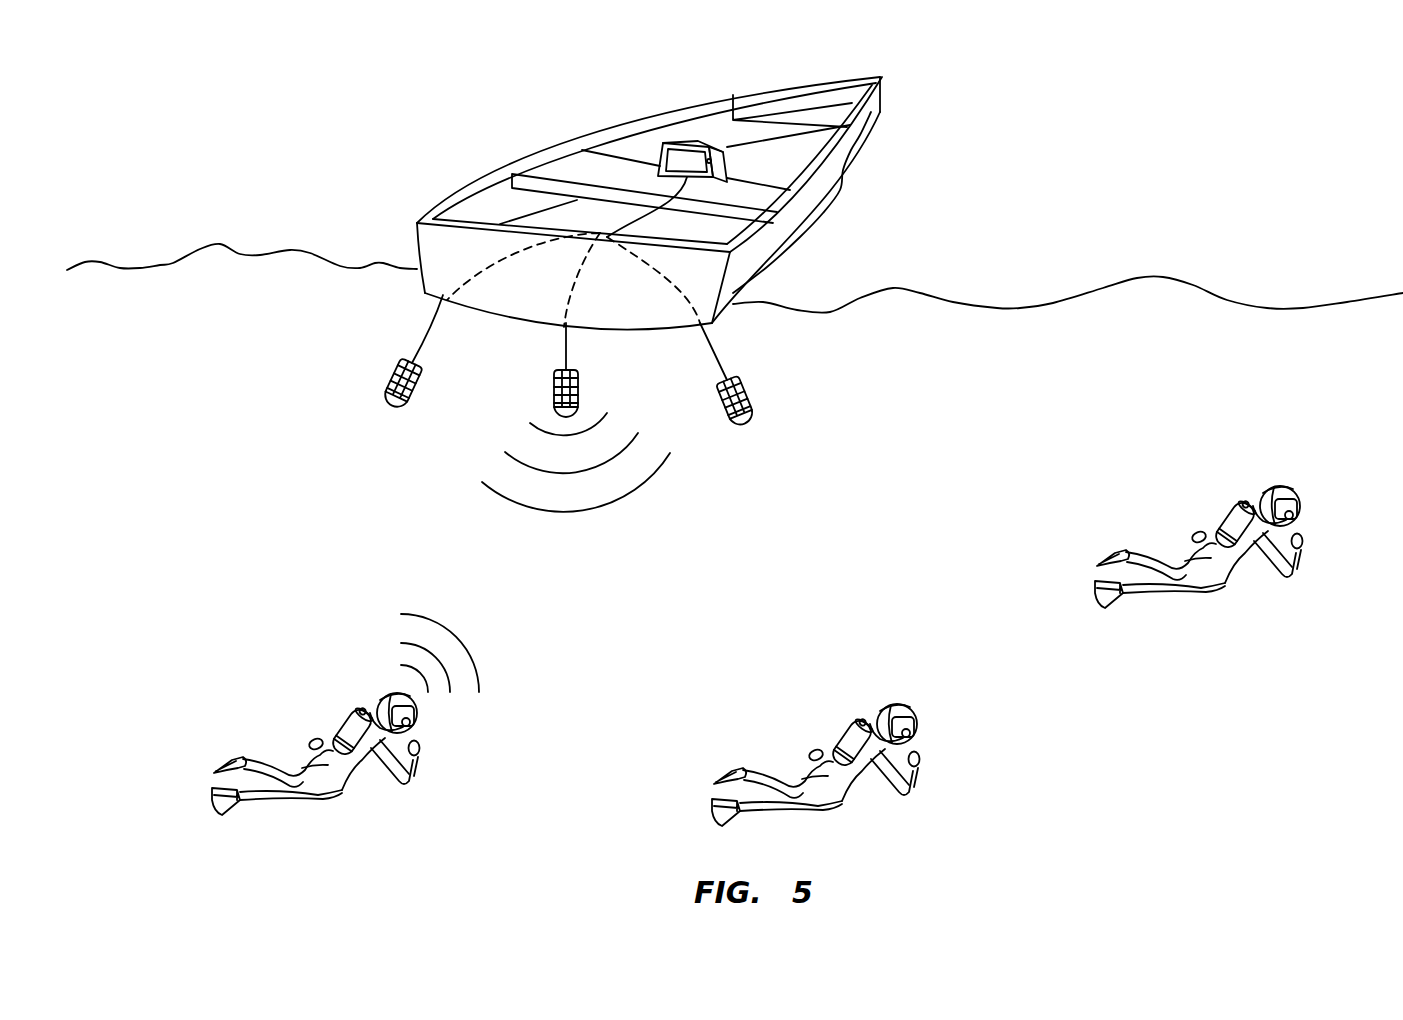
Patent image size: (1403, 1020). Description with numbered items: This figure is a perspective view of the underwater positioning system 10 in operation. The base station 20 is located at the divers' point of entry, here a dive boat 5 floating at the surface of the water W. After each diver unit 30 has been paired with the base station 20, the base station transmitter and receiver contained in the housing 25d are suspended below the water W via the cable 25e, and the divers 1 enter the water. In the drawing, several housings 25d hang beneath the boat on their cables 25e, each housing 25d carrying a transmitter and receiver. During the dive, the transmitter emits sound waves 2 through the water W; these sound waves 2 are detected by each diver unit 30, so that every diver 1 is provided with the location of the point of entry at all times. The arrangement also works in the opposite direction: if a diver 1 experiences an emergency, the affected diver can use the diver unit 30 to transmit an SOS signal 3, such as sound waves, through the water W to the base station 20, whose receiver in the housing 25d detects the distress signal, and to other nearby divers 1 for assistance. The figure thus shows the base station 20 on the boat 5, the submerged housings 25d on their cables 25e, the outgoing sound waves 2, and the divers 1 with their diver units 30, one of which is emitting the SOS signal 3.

The system 10 is at (735, 424).
The dive boat 5 is at (736, 93).
The base station 20 is at (630, 110).
The housing 25d is at (580, 393).
The cable 25e is at (423, 333).
The sound waves 2 is at (581, 526).
The SOS signal 3 is at (392, 650).
The diver 1 is at (273, 763).
The diver unit 30 is at (431, 722).
The water W is at (222, 243).